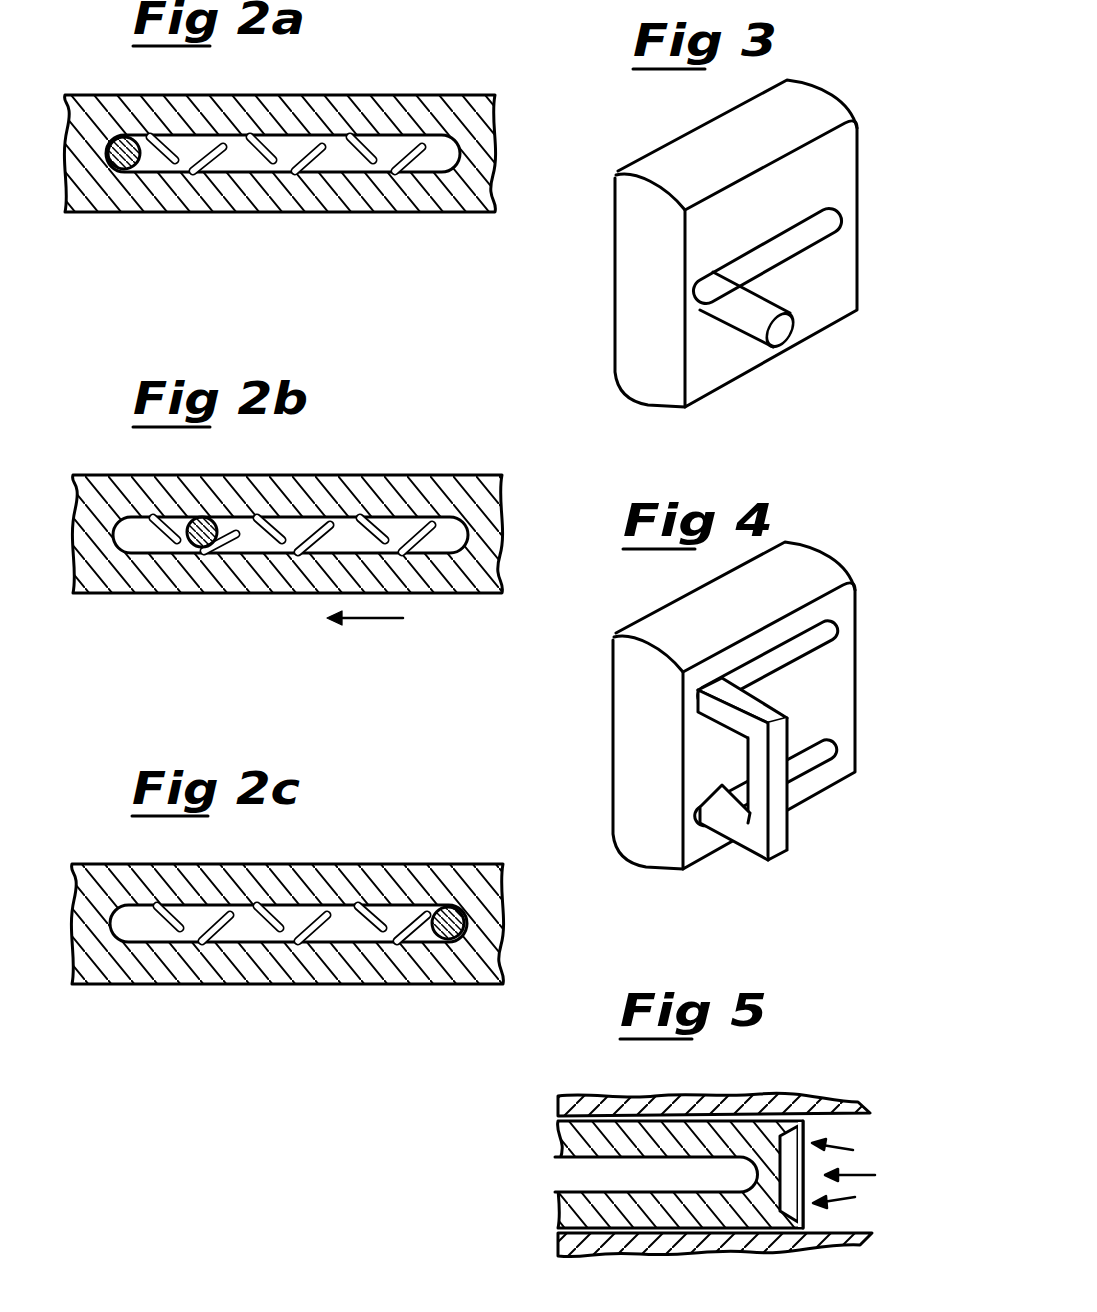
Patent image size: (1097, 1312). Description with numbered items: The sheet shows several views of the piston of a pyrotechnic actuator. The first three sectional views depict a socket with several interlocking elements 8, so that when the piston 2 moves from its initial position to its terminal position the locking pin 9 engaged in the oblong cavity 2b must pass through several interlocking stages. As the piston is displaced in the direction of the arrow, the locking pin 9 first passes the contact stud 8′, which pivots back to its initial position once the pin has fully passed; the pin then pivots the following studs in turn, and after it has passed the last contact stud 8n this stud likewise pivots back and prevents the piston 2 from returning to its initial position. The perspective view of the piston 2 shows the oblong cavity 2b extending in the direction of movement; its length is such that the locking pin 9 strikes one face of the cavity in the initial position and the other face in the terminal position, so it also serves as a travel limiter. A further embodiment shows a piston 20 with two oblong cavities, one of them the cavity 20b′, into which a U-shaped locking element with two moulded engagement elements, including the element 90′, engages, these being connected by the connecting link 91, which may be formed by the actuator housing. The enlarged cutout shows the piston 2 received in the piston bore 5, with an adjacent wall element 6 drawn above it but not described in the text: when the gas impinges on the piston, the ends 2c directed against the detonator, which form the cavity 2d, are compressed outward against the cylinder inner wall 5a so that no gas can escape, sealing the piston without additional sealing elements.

In FIG. 2A, the piston 2 is at (271, 104).
In FIG. 2B, the piston 2 is at (390, 481).
In FIG. 2C, the piston 2 is at (147, 870).
In FIG. 3, the piston 2 is at (842, 150).
In FIG. 5, the piston 2 is at (600, 1127).
In FIG. 2A, the oblong cavity 2b is at (388, 145).
In FIG. 2B, the oblong cavity 2b is at (133, 527).
In FIG. 2C, the oblong cavity 2b is at (297, 917).
In FIG. 3, the oblong cavity 2b is at (820, 228).
In FIG. 5, the oblong cavity 2b is at (655, 1170).
In FIG. 5, the ends 2c is at (785, 1125).
In FIG. 5, the cavity 2d is at (785, 1193).
In FIG. 5, the piston bore 5 is at (855, 1127).
In FIG. 5, the cylinder or cavity inner wall 5a is at (853, 1237).
In FIG. 5, the upper plate 6 is at (813, 1098).
In FIG. 2A, the interlocking elements 8 is at (213, 163).
In FIG. 2B, the contact stud 8′ is at (163, 540).
In FIG. 2C, the contact stud 8′ is at (160, 930).
In FIG. 2C, the last contact stud 8n is at (423, 936).
In FIG. 2A, the locking pin 9 is at (120, 173).
In FIG. 2B, the locking pin 9 is at (203, 519).
In FIG. 2C, the locking pin 9 is at (452, 908).
In FIG. 3, the locking pin 9 is at (755, 320).
In FIG. 4, the piston 20 is at (837, 603).
In FIG. 4, the oblong cavity 20b′ is at (820, 640).
In FIG. 4, the engagement element 90′ is at (723, 822).
In FIG. 4, the connecting link 91 is at (777, 793).